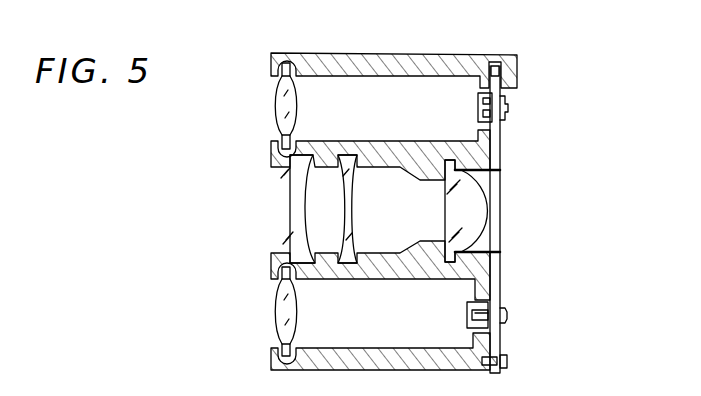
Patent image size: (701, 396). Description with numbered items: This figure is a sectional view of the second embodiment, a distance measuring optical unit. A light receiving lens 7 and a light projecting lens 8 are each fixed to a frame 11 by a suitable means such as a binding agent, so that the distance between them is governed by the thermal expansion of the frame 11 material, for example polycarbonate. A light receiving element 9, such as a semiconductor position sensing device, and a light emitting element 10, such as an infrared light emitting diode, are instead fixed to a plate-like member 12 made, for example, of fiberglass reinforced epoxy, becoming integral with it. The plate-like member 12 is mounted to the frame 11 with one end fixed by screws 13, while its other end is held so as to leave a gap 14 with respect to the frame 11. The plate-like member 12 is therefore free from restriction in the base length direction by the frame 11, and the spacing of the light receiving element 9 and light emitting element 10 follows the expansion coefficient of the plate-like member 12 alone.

The light receiving lens 7 is at (280, 110).
The light projecting lens 8 is at (276, 312).
The light receiving element 9 is at (478, 108).
The light emitting element 10 is at (467, 310).
The frame 11 is at (357, 352).
The plate-like member 12 is at (501, 216).
The screws 13 is at (508, 361).
The gap 14 is at (494, 64).